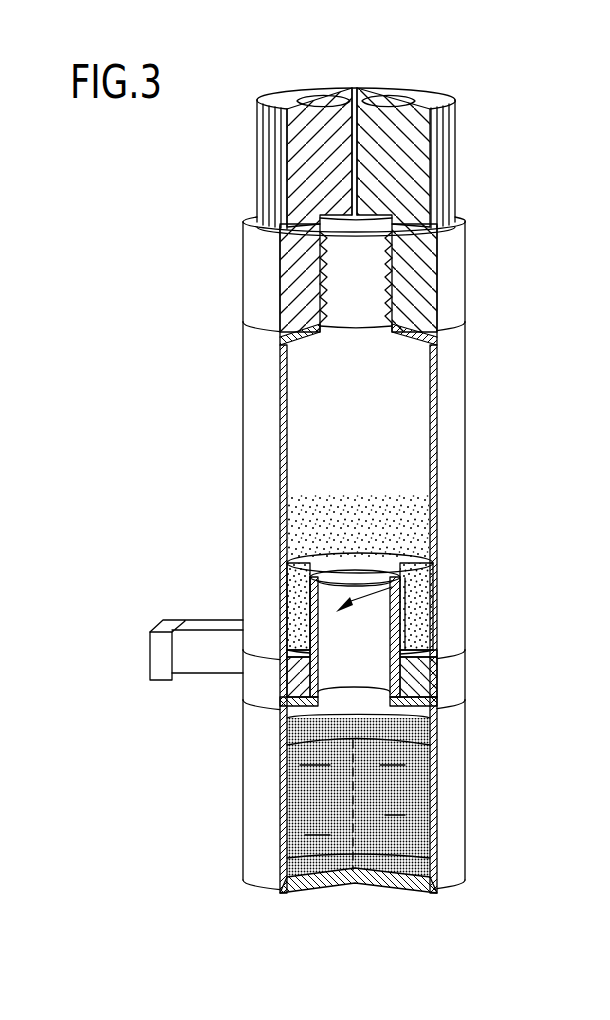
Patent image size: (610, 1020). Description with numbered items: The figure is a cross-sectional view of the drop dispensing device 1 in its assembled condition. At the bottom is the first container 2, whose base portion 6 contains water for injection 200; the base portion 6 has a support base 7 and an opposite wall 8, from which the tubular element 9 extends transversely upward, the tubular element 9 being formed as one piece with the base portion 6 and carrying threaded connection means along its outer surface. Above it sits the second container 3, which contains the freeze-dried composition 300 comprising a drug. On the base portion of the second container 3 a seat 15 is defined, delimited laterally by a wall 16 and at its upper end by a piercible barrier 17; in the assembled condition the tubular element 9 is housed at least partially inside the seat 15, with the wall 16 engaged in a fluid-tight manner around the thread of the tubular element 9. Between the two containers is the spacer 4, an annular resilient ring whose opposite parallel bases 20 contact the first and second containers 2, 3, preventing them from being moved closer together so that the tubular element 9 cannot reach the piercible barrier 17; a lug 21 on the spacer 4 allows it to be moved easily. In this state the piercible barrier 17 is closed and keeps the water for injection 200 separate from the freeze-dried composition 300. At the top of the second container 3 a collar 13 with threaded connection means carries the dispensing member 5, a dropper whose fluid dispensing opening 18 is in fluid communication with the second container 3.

The drop dispensing device 1 is at (540, 122).
The first container 2 is at (262, 788).
The second container 3 is at (452, 408).
The spacer 4 is at (263, 683).
The dispensing member 5 is at (262, 292).
The base portion 6 is at (481, 818).
The support base 7 is at (313, 888).
The opposite wall 8 is at (437, 676).
The tubular element 9 is at (373, 610).
The collar 13 is at (330, 232).
The seat 15 is at (323, 620).
The wall 16 is at (320, 553).
The piercible barrier 17 is at (380, 553).
The fluid dispensing opening 18 is at (363, 78).
The bases 20 is at (432, 648).
The lug 21 is at (160, 645).
The water for injection 200 is at (378, 822).
The freeze-dried composition 300 is at (330, 513).